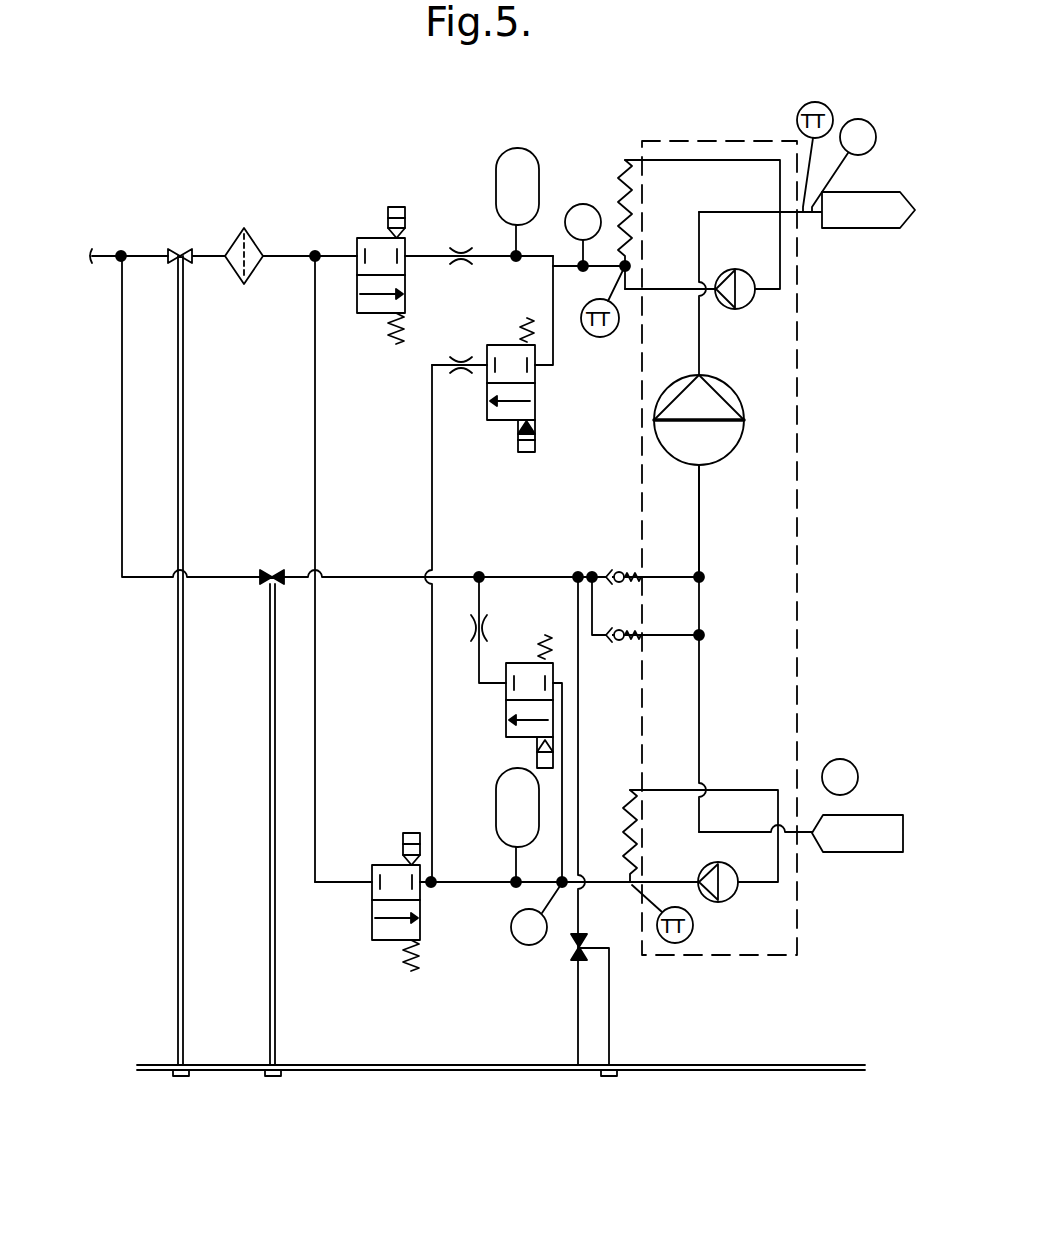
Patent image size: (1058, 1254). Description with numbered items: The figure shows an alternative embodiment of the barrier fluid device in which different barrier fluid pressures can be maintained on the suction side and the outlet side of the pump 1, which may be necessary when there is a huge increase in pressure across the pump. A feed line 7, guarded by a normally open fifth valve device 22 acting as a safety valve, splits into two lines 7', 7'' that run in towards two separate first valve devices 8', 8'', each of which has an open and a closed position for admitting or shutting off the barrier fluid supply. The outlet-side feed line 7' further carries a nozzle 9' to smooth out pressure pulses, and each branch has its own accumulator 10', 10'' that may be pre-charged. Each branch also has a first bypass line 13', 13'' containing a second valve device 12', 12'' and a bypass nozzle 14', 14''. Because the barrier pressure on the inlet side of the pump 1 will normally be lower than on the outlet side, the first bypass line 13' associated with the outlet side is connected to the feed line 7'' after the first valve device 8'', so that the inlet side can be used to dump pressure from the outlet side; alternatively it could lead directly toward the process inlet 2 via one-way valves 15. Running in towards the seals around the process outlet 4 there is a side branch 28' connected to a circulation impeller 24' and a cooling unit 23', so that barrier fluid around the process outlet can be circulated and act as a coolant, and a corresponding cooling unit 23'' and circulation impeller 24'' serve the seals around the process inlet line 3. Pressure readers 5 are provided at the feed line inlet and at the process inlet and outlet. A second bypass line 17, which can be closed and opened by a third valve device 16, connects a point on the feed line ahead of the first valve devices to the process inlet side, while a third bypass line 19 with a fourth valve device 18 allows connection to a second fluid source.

The pump 1 is at (744, 402).
The process fluid inlet 2 is at (699, 515).
The process inlet line 3 is at (866, 852).
The process outlet 4 is at (880, 228).
The pressure reader 5 is at (583, 204).
The feed line 7 is at (129, 217).
The feed line 7' is at (310, 227).
The feed line 7'' is at (281, 569).
The first valve device 8' is at (381, 242).
The first valve device 8'' is at (506, 874).
The nozzle 9' is at (479, 223).
The accumulator 10' is at (514, 173).
The accumulator 10'' is at (500, 827).
The second valve device 12' is at (548, 354).
The second valve device 12'' is at (507, 708).
The first bypass line 13' is at (393, 623).
The first bypass line 13'' is at (595, 785).
The bypass nozzle 14' is at (459, 330).
The bypass nozzle 14'' is at (448, 630).
The one-way valve 15 is at (672, 632).
The third valve device 16 is at (266, 570).
The second bypass line 17 is at (122, 422).
The fourth valve device 18 is at (573, 958).
The third bypass line 19 is at (579, 1015).
The fifth valve device 22 is at (177, 250).
The cooling unit 23' is at (600, 188).
The cooling unit 23'' is at (688, 816).
The circulation impeller 24' is at (794, 298).
The circulation impeller 24'' is at (733, 909).
The side branch 28' is at (702, 188).